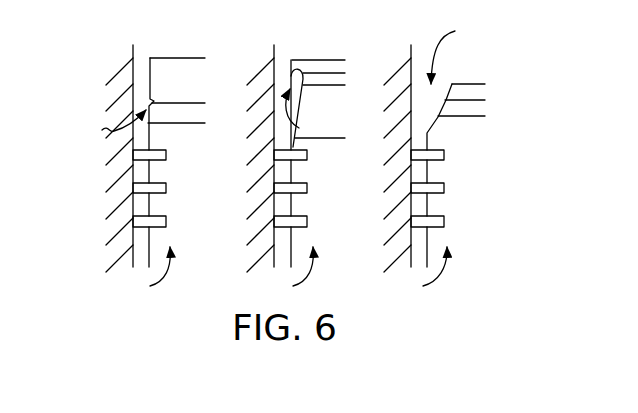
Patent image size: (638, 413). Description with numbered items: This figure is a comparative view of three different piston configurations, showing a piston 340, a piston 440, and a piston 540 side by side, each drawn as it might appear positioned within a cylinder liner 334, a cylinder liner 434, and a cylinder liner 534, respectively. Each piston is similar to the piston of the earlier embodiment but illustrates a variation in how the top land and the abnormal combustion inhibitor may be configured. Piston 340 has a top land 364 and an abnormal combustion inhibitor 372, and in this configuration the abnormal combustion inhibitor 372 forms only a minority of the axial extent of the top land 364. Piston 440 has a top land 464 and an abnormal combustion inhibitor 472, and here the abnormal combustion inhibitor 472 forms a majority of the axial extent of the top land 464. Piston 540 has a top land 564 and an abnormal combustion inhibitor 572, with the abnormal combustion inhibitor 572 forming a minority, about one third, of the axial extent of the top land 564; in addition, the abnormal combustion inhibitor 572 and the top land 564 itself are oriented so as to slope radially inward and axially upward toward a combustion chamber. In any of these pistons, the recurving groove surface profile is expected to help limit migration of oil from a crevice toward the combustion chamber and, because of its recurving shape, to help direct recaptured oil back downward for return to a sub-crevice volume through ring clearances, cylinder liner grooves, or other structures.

The cylinder liner 334 is at (119, 181).
The piston 340 is at (140, 271).
The top land 364 is at (146, 60).
The abnormal combustion inhibitor 372 is at (106, 123).
The cylinder liner 434 is at (260, 181).
The piston 440 is at (286, 271).
The top land 464 is at (290, 72).
The abnormal combustion inhibitor 472 is at (312, 113).
The cylinder liner 534 is at (395, 181).
The piston 540 is at (416, 271).
The top land 564 is at (446, 100).
The abnormal combustion inhibitor 572 is at (462, 51).